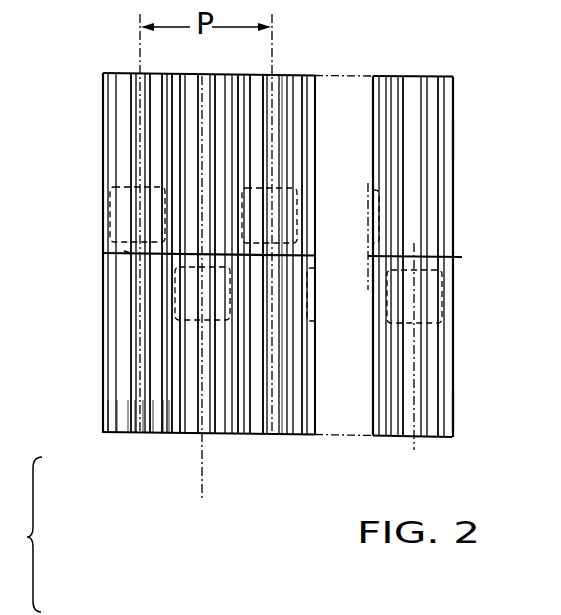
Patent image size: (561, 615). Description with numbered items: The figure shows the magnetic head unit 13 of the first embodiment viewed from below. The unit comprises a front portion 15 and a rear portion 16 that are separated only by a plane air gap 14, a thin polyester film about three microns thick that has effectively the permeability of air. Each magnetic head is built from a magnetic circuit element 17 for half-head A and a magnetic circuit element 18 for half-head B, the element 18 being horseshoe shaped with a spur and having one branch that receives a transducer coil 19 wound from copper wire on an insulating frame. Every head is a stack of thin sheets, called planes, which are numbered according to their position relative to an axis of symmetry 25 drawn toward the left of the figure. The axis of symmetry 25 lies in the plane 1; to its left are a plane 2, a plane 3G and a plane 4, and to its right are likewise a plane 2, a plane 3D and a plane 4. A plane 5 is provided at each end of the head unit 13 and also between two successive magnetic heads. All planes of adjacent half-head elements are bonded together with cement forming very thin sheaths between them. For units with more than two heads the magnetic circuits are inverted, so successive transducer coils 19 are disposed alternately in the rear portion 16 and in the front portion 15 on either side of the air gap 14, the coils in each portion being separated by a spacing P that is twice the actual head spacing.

The plane 1 is at (135, 432).
The plane 2 is at (128, 432).
The plane 3G is at (117, 432).
The plane 3D is at (153, 432).
The plane 4 is at (108, 432).
The plane 5 is at (102, 432).
The magnetic head unit 13 is at (490, 262).
The plane air gap 14 is at (128, 253).
The front portion 15 is at (453, 406).
The rear portion 16 is at (453, 147).
The magnetic circuit element 17 is at (205, 74).
The magnetic circuit element 18 is at (147, 73).
The transducer coil 19 is at (110, 221).
The axis of symmetry 25 is at (140, 45).